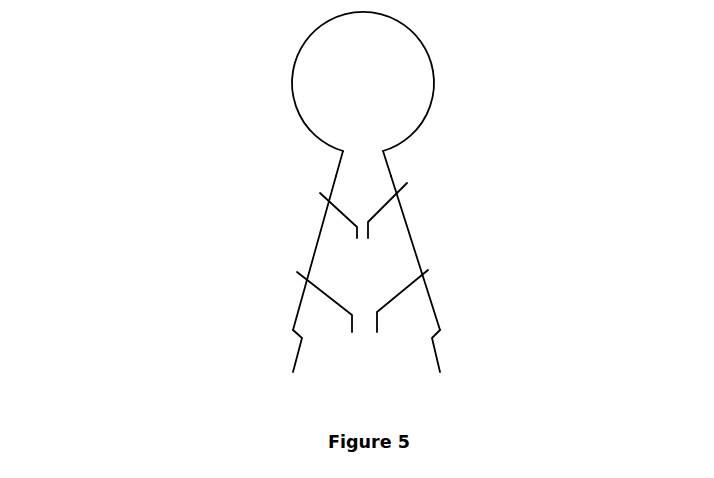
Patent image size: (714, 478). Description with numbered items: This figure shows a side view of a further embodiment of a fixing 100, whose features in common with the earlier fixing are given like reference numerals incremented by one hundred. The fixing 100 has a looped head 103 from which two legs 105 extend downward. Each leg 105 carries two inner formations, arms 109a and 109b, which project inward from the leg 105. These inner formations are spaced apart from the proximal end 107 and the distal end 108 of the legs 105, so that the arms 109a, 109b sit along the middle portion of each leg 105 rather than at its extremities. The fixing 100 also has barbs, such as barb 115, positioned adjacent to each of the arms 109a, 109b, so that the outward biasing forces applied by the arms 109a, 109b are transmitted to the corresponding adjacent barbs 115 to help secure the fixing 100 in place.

The fixing 100 is at (153, 105).
The ring loop 103 is at (440, 63).
The legs 105 is at (433, 312).
The proximal end 107 is at (348, 147).
The distal end 108 is at (288, 372).
The arm 109a is at (377, 220).
The arm 109b is at (337, 303).
The tab tip 115 is at (432, 272).